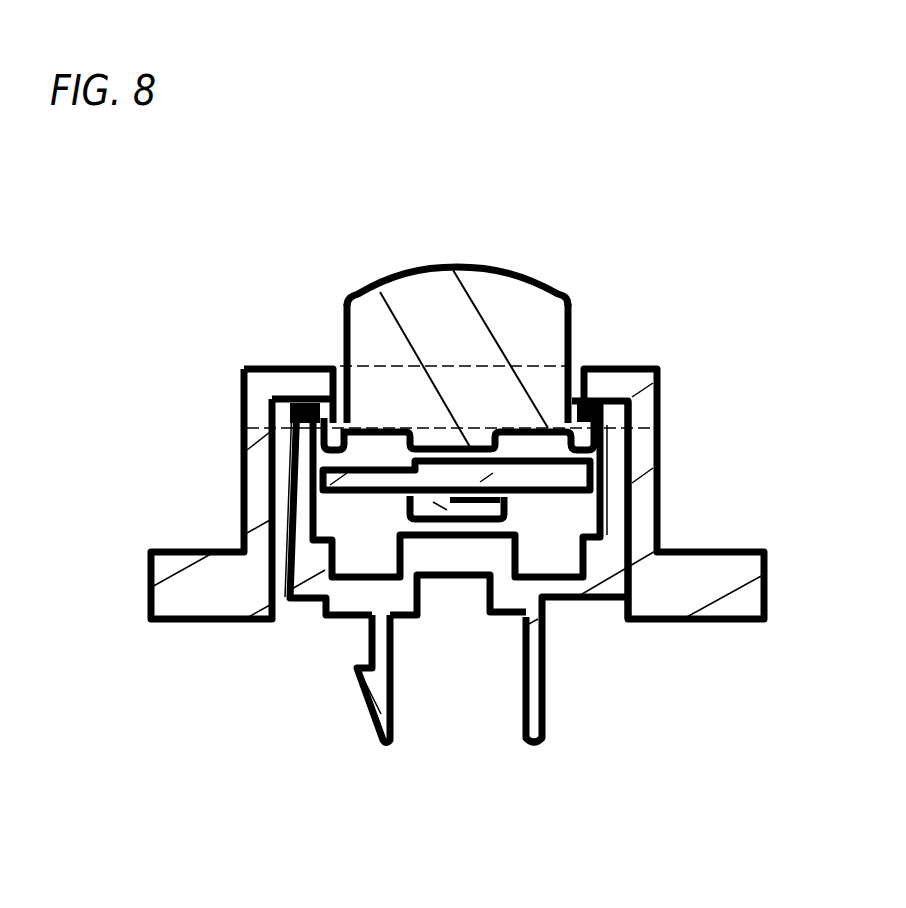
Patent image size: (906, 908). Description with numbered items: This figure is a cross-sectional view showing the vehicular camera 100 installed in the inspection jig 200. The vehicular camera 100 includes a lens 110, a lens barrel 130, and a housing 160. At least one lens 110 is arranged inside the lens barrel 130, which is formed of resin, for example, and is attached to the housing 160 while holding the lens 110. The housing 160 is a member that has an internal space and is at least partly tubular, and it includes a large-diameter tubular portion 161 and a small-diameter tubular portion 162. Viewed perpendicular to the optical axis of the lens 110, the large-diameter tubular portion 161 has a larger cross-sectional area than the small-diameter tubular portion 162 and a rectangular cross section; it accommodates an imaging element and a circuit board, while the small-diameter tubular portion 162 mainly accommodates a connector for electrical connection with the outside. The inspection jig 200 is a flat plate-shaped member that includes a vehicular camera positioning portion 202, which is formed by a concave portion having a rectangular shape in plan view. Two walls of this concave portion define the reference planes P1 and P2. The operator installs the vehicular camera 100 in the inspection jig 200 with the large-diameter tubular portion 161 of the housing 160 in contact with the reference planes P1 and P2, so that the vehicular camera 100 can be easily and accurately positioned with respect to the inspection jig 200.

The vehicular camera 100 is at (465, 357).
The lens 110 is at (428, 267).
The lens barrel 130 is at (343, 317).
The housing 160 is at (415, 588).
The large-diameter tubular portion 161 is at (293, 603).
The small-diameter tubular portion 162 is at (377, 722).
The inspection jig 200 is at (455, 492).
The vehicular camera positioning portion 202 is at (659, 513).
The reference plane P1 is at (340, 363).
The reference plane P2 is at (628, 392).